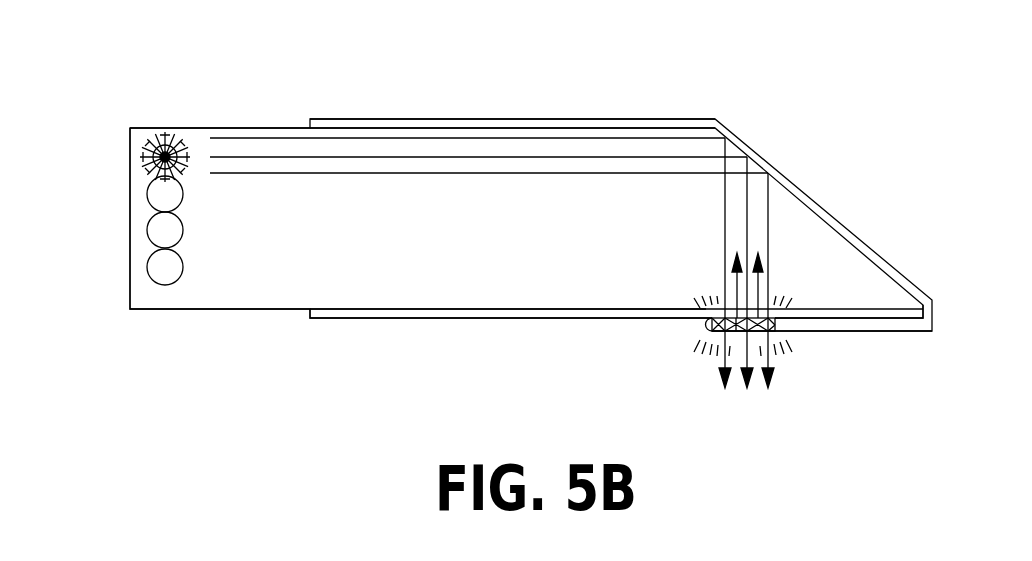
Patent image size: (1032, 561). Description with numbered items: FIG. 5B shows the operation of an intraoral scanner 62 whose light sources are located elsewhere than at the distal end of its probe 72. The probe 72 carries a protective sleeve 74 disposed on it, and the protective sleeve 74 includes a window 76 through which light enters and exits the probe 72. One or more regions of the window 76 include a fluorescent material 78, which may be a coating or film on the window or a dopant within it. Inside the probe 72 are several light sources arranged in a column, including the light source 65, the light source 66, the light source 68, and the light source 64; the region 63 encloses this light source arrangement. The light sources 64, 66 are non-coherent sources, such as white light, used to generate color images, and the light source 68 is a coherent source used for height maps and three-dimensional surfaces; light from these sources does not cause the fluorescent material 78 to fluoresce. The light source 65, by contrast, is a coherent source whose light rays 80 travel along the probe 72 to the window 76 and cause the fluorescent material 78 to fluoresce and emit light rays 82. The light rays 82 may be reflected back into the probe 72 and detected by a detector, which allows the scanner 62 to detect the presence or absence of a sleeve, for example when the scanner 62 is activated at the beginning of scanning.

The intraoral scanner 62 is at (390, 75).
The housing 63 is at (118, 137).
The light source 64 is at (165, 285).
The light source 65 is at (163, 132).
The light source 66 is at (147, 204).
The light source 68 is at (147, 238).
The probe 72 is at (287, 310).
The protective sleeve 74 is at (497, 118).
The window 76 is at (825, 333).
The fluorescent material 78 is at (717, 332).
The light rays 80 is at (390, 185).
The light rays 82 is at (737, 283).